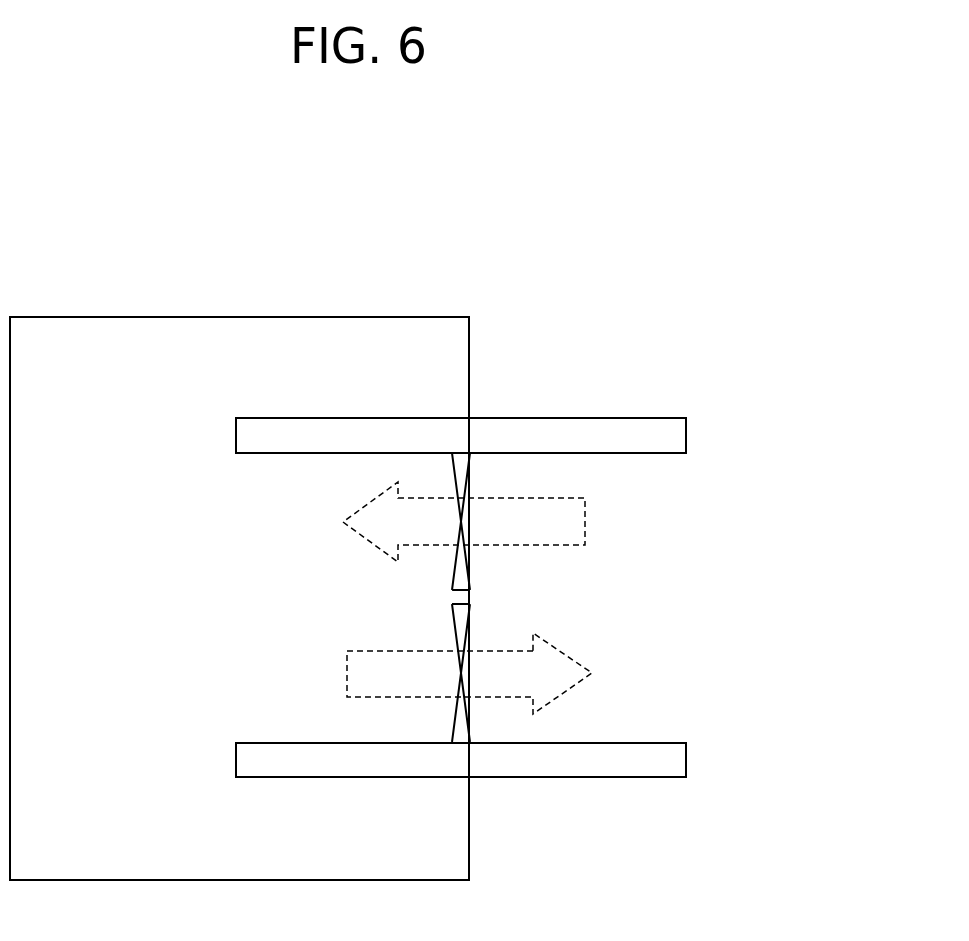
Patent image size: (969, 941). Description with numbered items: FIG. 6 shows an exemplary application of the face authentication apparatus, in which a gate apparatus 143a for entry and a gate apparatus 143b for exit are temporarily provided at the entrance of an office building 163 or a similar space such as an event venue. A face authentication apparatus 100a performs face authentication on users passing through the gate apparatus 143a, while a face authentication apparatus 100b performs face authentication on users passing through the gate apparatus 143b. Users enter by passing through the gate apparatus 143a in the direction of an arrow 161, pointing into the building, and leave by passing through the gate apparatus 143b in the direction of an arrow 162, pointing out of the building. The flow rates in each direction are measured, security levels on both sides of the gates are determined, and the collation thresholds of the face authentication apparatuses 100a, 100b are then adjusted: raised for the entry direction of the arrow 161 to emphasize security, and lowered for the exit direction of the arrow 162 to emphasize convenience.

The office building 163 is at (213, 316).
The face authentication apparatus 100a is at (562, 418).
The face authentication apparatus 100b is at (686, 752).
The gate apparatus for entry 143a is at (468, 478).
The gate apparatus for exit 143b is at (470, 627).
The arrow 161 is at (588, 517).
The arrow 162 is at (563, 636).